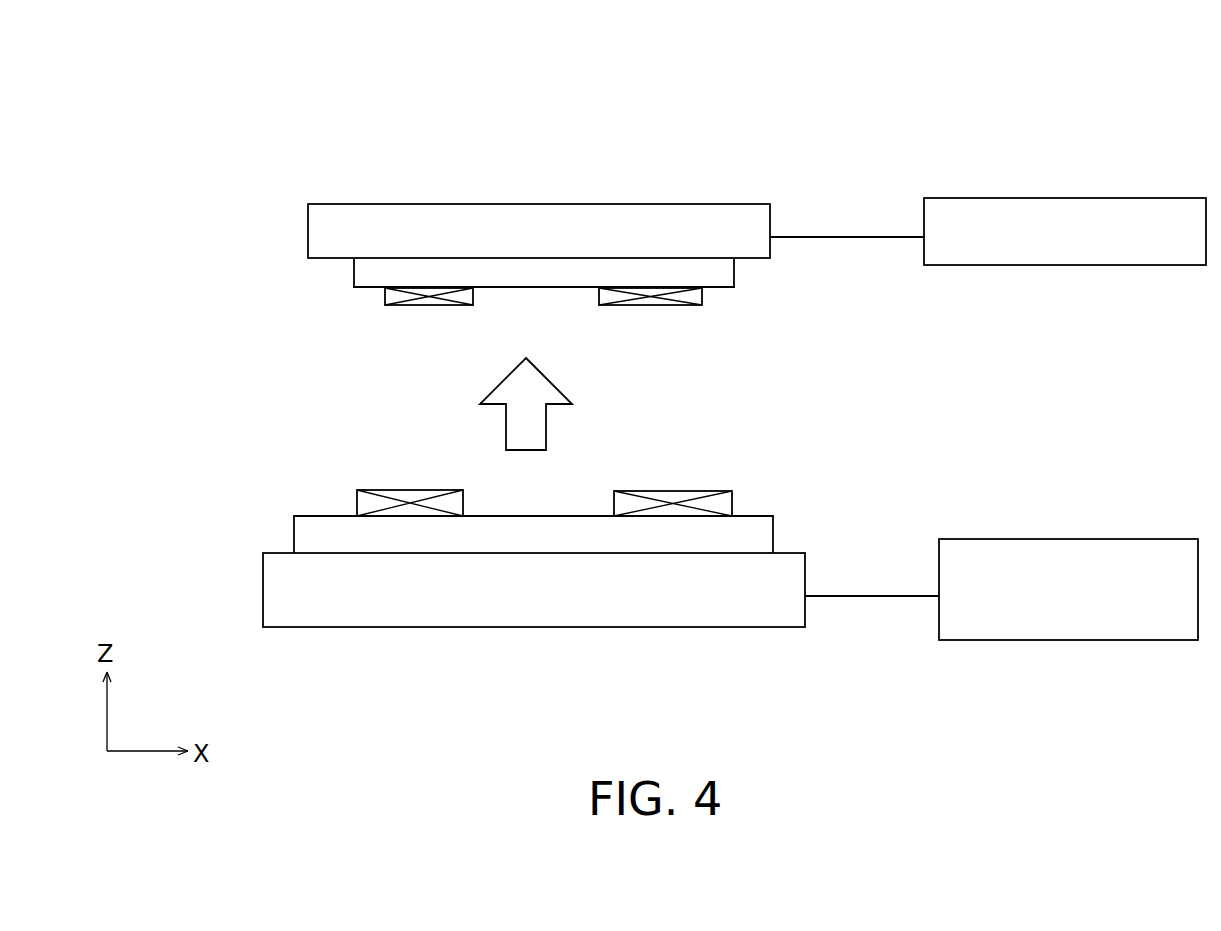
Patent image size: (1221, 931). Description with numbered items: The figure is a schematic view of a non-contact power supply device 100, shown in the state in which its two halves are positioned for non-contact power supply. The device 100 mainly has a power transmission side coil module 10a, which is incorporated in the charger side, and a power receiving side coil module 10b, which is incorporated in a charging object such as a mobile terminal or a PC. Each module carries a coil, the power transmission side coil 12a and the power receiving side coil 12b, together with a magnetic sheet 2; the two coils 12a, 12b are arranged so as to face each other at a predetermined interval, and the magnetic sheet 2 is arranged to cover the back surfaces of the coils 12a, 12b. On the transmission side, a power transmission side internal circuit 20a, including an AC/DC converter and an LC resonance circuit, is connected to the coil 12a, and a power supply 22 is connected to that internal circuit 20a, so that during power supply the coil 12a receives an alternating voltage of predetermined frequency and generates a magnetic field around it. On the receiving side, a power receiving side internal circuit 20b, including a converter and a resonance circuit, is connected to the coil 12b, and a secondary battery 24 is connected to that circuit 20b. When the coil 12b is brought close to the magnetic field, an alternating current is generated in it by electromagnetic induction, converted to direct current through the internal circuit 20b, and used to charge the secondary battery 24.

The non-contact power supply device 100 is at (752, 138).
The magnetic sheet 2 is at (481, 413).
The power transmission side coil module 10a is at (288, 517).
The power receiving side coil module 10b is at (350, 287).
The power transmission side coil 12a is at (397, 492).
The power receiving side coil 12b is at (427, 305).
The power transmission side internal circuit 20a is at (590, 608).
The power receiving side internal circuit 20b is at (585, 230).
The power supply 22 is at (1103, 552).
The secondary battery 24 is at (1103, 207).